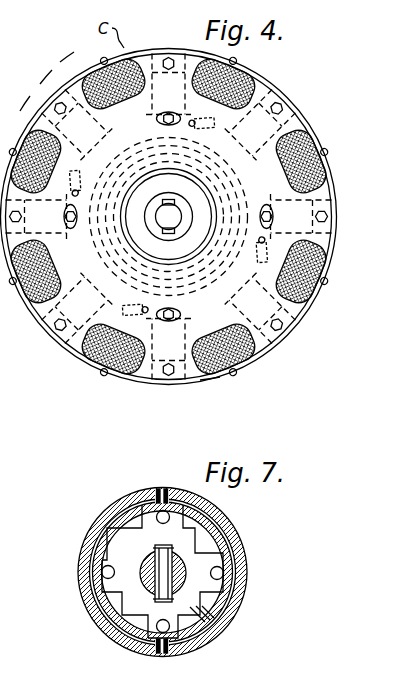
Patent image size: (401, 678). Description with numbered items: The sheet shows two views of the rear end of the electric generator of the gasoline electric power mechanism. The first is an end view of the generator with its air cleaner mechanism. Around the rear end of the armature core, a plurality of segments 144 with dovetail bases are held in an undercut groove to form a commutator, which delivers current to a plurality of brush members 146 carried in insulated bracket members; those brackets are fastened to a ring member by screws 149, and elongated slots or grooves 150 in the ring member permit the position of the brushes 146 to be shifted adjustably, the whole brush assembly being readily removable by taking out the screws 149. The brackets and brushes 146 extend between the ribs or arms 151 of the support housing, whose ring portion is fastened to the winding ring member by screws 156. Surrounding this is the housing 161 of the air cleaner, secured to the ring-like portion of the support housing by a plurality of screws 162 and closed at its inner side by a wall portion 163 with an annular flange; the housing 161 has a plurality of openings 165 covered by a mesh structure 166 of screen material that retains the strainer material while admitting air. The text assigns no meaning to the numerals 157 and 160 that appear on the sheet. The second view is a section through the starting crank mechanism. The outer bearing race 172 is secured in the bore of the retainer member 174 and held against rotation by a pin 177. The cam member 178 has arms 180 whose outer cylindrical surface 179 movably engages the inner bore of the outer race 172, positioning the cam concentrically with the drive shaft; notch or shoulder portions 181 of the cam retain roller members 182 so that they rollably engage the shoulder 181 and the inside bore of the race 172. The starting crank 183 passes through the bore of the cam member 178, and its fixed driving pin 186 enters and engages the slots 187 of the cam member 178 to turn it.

In FIG. 4, the segments 144 is at (207, 140).
In FIG. 4, the brush members 146 is at (226, 123).
In FIG. 4, the screws 149 is at (168, 112).
In FIG. 4, the elongated slots or grooves 150 is at (150, 120).
In FIG. 4, the ribs or arms 151 is at (52, 108).
In FIG. 4, the screws 156 is at (169, 52).
In FIG. 4, the housing flange 157 is at (22, 100).
In FIG. 4, the housing wall 160 is at (44, 78).
In FIG. 4, the housing 161 is at (205, 380).
In FIG. 4, the screws 162 is at (99, 58).
In FIG. 4, the wall portion 163 is at (66, 56).
In FIG. 4, the openings 165 is at (80, 76).
In FIG. 4, the mesh structure 166 is at (128, 52).
In FIG. 7, the outer bearing race 172 is at (225, 512).
In FIG. 7, the retainer member 174 is at (238, 535).
In FIG. 7, the pin 177 is at (158, 490).
In FIG. 7, the cam member 178 is at (210, 618).
In FIG. 7, the cylindrical surface 179 is at (185, 505).
In FIG. 7, the arms 180 is at (96, 540).
In FIG. 7, the notch or shoulder portions 181 is at (115, 515).
In FIG. 7, the roller members 182 is at (166, 510).
In FIG. 7, the starting crank 183 is at (150, 590).
In FIG. 7, the driving pin 186 is at (163, 548).
In FIG. 7, the slots 187 is at (156, 552).